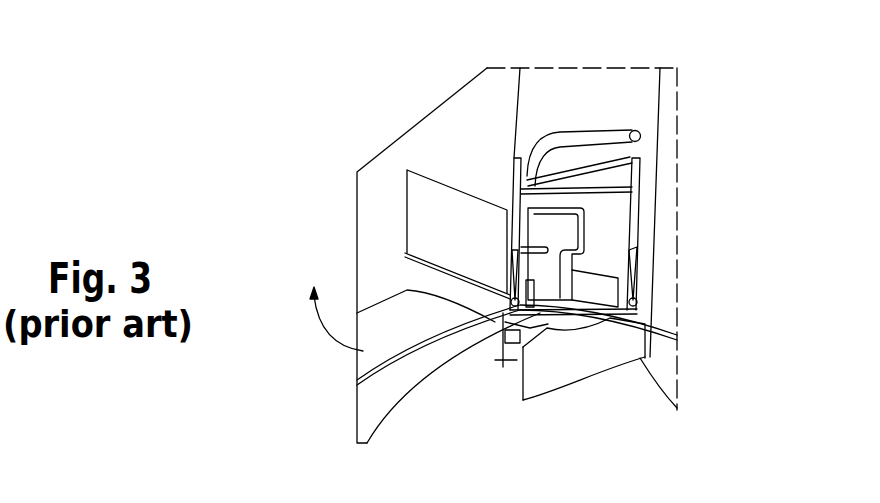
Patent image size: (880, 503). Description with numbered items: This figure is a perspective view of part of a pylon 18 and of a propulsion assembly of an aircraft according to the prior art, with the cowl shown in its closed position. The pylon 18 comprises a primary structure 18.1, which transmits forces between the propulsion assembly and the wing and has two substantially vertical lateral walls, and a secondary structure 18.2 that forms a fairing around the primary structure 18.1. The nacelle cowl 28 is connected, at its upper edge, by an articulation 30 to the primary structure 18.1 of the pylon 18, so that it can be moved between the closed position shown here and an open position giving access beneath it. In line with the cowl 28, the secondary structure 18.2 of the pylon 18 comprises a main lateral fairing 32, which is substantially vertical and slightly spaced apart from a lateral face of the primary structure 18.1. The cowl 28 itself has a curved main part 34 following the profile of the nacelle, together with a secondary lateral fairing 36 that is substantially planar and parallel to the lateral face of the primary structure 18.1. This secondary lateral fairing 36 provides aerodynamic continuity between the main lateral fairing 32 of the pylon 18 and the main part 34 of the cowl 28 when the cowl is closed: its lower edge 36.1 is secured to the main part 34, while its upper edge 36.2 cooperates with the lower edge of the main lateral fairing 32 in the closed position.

The pylon 18 is at (404, 123).
The primary structure 18.1 is at (638, 210).
The secondary structure 18.2 is at (515, 110).
The cowl 28 is at (346, 394).
The articulation 30 is at (548, 333).
The main lateral fairing 32 is at (423, 235).
The curved main part 34 is at (407, 375).
The secondary lateral fairing 36 is at (496, 234).
The lower edge 36.1 is at (450, 302).
The upper edge 36.2 is at (460, 272).